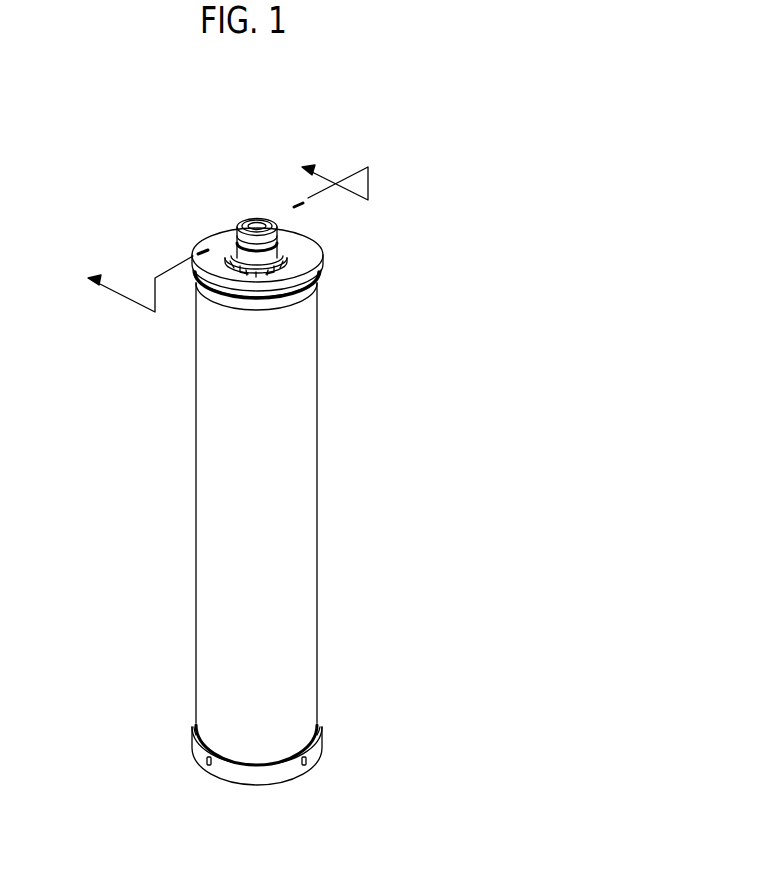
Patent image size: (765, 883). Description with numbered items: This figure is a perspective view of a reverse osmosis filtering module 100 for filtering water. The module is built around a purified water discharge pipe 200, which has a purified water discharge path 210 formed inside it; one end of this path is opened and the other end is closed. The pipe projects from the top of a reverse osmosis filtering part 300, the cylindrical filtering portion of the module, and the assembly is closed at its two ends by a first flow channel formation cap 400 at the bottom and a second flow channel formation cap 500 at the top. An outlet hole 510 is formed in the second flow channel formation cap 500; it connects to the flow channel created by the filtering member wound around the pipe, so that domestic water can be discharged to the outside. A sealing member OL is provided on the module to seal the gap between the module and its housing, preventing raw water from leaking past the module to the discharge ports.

The reverse osmosis filtering module 100 is at (280, 82).
The purified water discharge pipe 200 is at (220, 225).
The purified water discharge path 210 is at (260, 228).
The reverse osmosis filtering part 300 is at (318, 497).
The first flow channel formation cap 400 is at (322, 767).
The second flow channel formation cap 500 is at (327, 275).
The outlet hole 510 is at (285, 257).
The sealing member OL is at (234, 241).